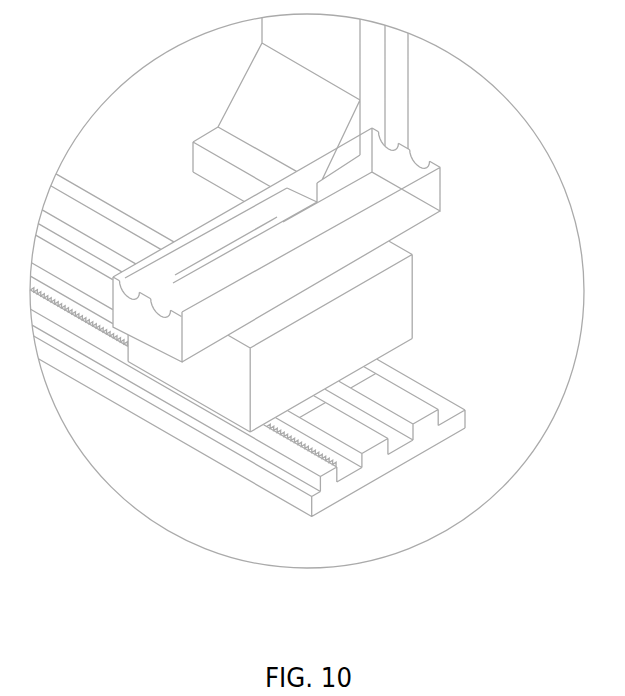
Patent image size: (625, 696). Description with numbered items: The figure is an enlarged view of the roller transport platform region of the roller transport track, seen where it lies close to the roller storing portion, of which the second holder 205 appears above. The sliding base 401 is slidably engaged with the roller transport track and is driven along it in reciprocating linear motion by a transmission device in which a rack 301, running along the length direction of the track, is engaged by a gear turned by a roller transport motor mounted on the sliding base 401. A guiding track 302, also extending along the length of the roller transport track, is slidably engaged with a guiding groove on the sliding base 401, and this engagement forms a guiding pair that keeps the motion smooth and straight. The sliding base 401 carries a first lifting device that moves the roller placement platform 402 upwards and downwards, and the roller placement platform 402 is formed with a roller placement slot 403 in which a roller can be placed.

The second holder 205 is at (230, 152).
The rack 301 is at (305, 462).
The guiding track 302 is at (376, 440).
The sliding base 401 is at (383, 323).
The roller placement platform 402 is at (397, 207).
The roller placement slot 403 is at (433, 157).